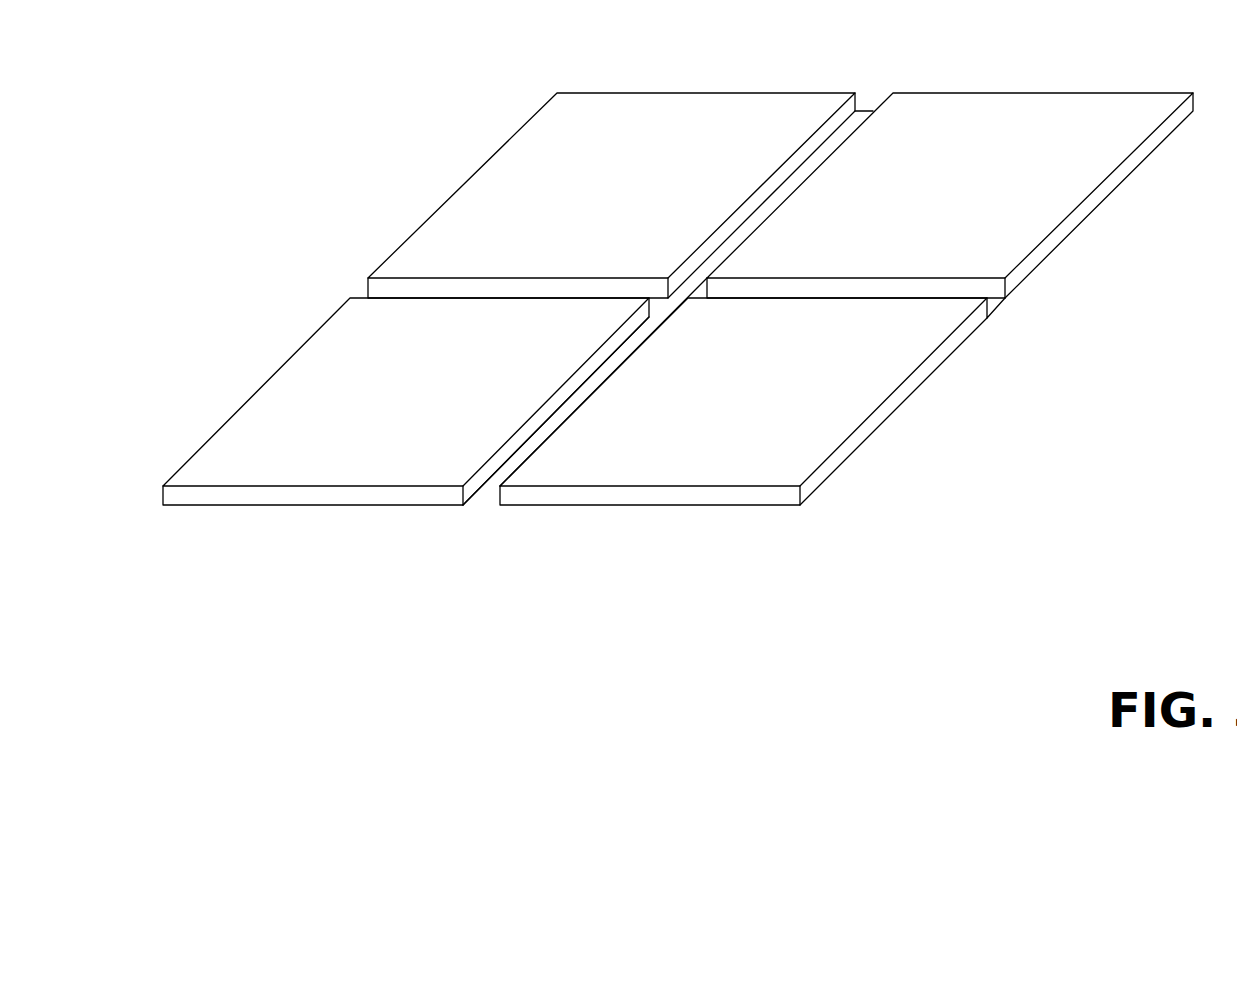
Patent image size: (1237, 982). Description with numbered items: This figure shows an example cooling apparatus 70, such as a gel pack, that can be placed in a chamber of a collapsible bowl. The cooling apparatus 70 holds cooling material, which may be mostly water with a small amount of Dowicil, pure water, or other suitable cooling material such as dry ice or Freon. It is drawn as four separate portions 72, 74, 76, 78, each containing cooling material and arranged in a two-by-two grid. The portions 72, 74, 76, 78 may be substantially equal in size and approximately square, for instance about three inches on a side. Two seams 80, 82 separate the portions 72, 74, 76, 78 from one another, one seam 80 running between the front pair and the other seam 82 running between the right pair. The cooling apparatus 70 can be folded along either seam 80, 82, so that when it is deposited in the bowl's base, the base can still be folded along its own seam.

The cooling apparatus 70 is at (678, 328).
The portion 72 is at (597, 181).
The portion 74 is at (953, 182).
The portion 76 is at (410, 407).
The portion 78 is at (748, 407).
The seam 80 is at (464, 515).
The seam 82 is at (1014, 318).